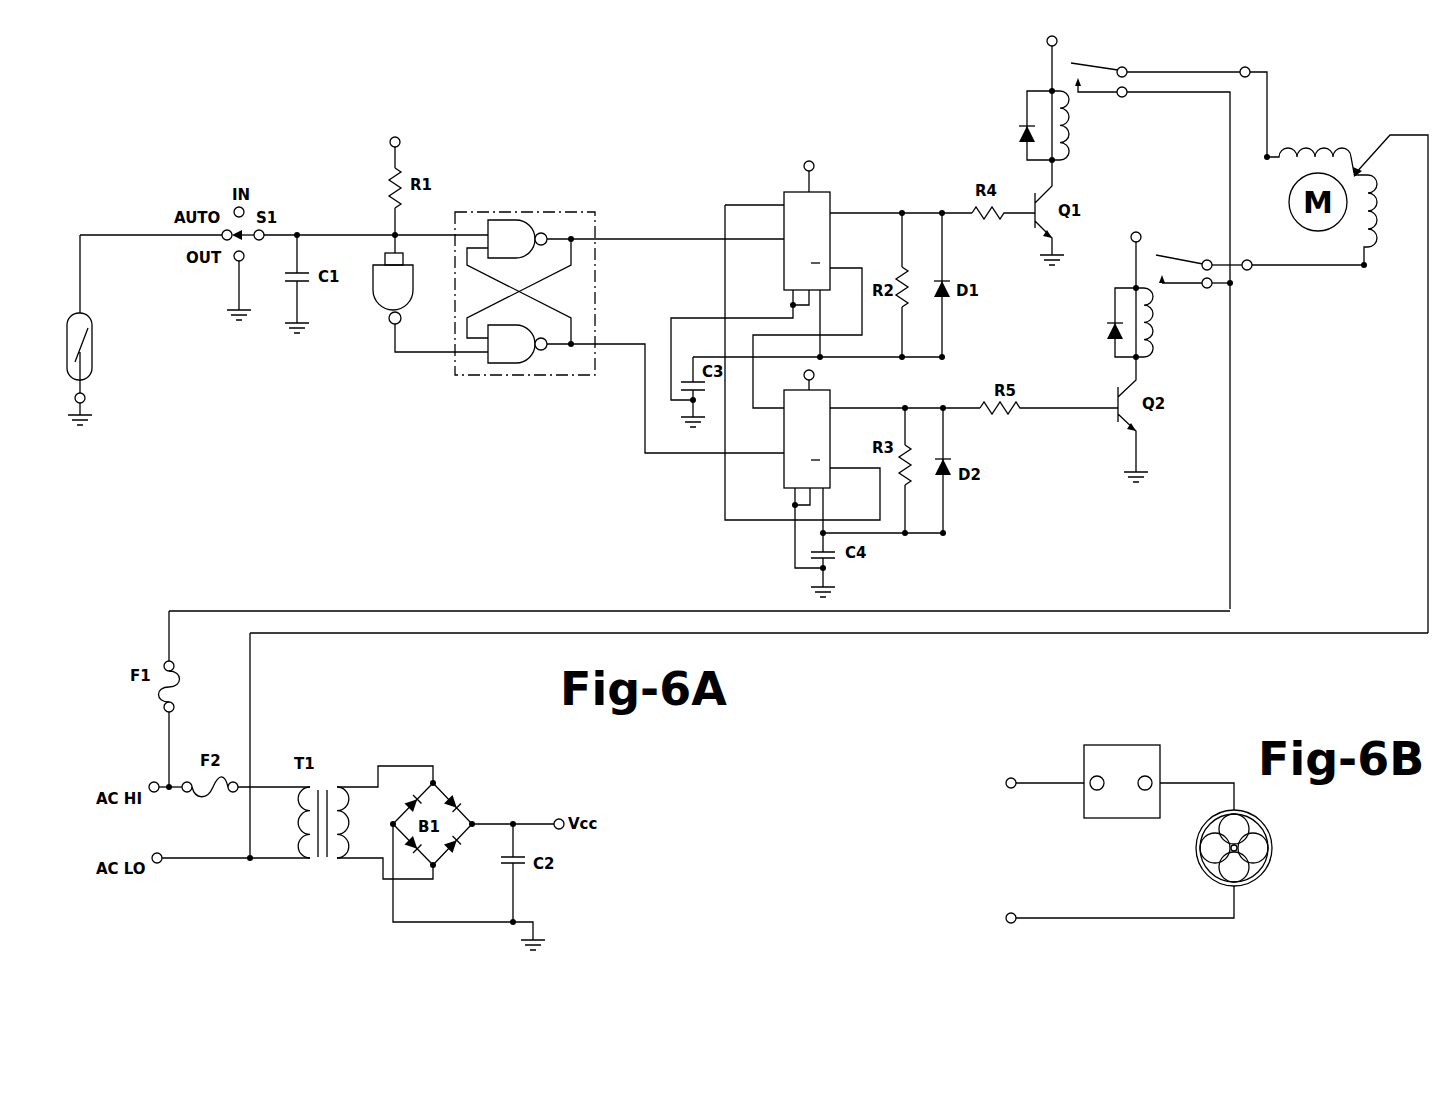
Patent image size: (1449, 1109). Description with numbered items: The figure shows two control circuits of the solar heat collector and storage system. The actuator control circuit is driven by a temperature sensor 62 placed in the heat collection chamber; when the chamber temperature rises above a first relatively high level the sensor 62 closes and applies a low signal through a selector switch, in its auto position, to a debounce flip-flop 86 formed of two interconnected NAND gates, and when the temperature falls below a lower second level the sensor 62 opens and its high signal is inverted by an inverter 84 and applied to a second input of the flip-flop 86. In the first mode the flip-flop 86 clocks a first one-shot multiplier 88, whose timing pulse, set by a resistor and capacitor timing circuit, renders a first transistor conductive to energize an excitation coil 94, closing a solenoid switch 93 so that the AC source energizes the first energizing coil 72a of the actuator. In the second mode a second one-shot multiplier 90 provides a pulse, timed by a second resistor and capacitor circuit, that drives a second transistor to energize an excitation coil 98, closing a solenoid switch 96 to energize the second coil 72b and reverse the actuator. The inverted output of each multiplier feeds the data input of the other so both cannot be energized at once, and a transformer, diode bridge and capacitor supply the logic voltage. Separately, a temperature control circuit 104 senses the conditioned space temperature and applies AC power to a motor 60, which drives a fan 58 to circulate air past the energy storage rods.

In FIG. 6A, the temperature sensor 62 is at (93, 351).
In FIG. 6A, the inverter 84 is at (425, 268).
In FIG. 6A, the debounce flip-flop 86 is at (580, 209).
In FIG. 6A, the first one-shot multiplier 88 is at (835, 201).
In FIG. 6A, the second one-shot multiplier 90 is at (835, 400).
In FIG. 6A, the solenoid switch 93 is at (1110, 52).
In FIG. 6A, the excitation coil 94 is at (1072, 160).
In FIG. 6A, the solenoid switch 96 is at (1192, 262).
In FIG. 6A, the excitation coil 98 is at (1158, 311).
In FIG. 6A, the first energizing coil 72a is at (1320, 145).
In FIG. 6A, the second energizing coil 72b is at (1385, 244).
In FIG. 6B, the temperature control circuit 104 is at (1148, 745).
In FIG. 6B, the motor 60 is at (1258, 822).
In FIG. 6B, the fan 58 is at (1255, 848).